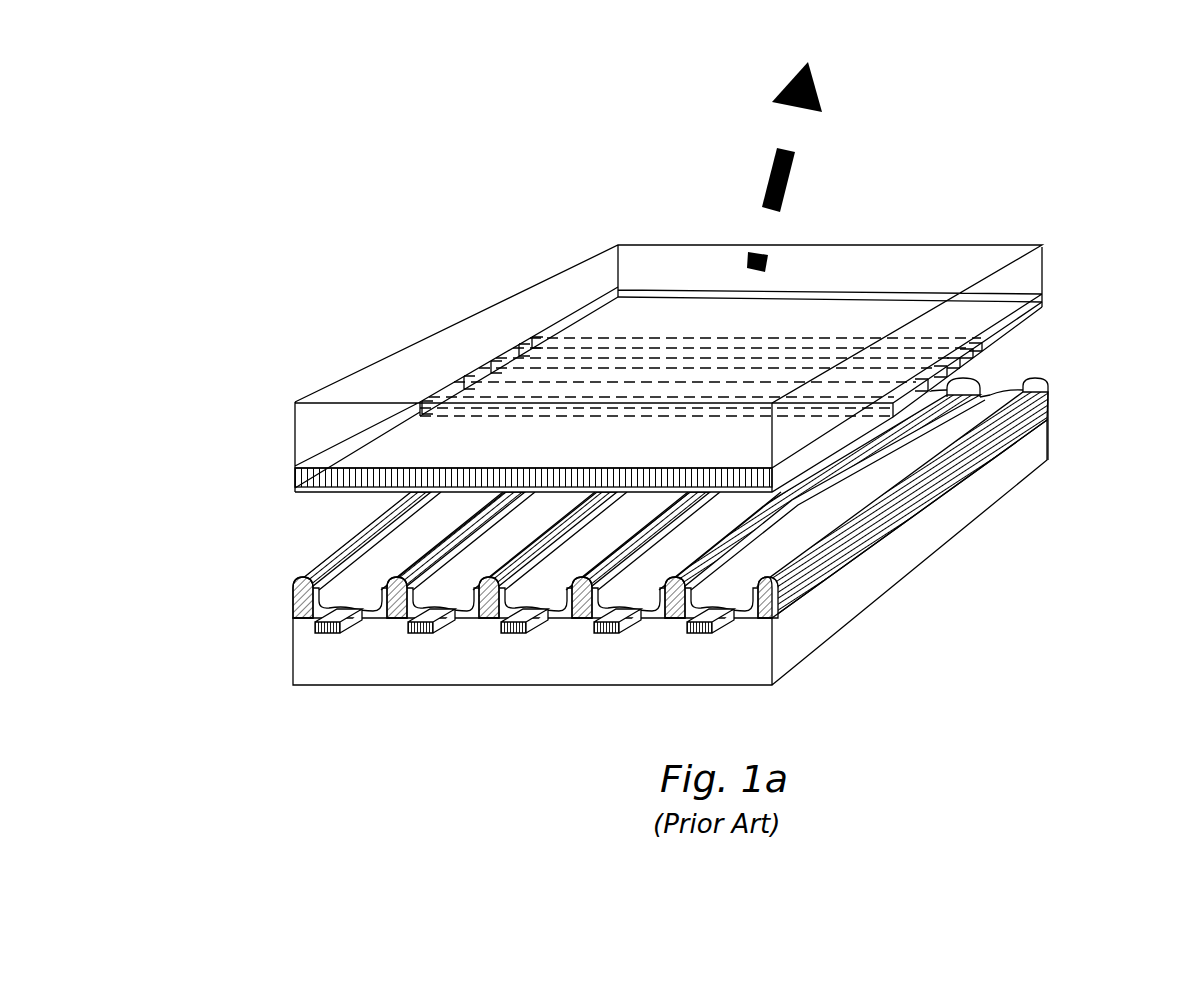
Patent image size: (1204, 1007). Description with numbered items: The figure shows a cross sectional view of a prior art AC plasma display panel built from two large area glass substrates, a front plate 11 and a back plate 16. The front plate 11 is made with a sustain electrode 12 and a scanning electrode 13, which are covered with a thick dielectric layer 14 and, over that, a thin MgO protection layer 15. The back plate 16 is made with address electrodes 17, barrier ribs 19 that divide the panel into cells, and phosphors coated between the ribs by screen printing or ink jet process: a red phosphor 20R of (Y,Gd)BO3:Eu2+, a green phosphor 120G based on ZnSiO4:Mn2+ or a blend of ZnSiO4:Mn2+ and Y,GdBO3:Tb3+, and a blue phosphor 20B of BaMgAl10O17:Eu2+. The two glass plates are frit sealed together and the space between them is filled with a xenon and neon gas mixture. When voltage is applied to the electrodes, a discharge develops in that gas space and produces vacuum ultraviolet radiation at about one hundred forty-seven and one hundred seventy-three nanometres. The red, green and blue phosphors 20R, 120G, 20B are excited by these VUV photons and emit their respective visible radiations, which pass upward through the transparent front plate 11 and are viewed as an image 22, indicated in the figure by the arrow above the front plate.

The front plate 11 is at (1012, 277).
The sustain electrode 12 is at (905, 412).
The scanning electrode 13 is at (990, 363).
The dielectric layer 14 is at (617, 484).
The protection layer 15 is at (298, 494).
The back plate 16 is at (796, 648).
The address electrodes 17 is at (306, 632).
The barrier ribs 19 is at (800, 588).
The red phosphor 20R is at (370, 625).
The green phosphor layer 120G is at (463, 627).
The blue phosphor 20B is at (555, 627).
The image 22 is at (789, 151).